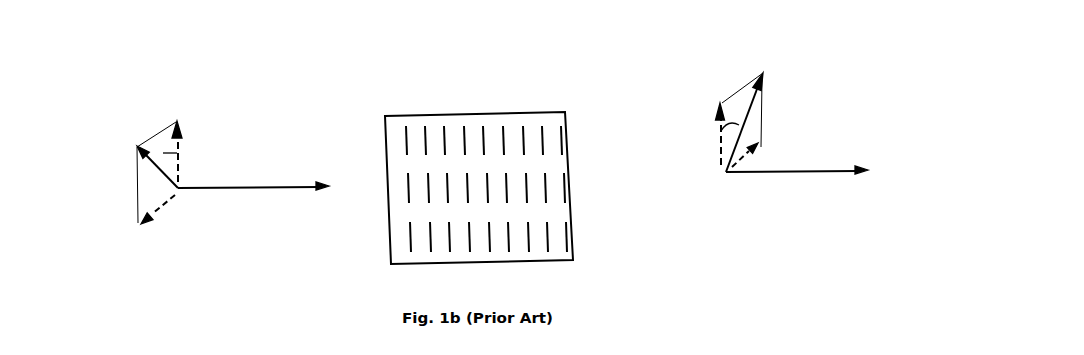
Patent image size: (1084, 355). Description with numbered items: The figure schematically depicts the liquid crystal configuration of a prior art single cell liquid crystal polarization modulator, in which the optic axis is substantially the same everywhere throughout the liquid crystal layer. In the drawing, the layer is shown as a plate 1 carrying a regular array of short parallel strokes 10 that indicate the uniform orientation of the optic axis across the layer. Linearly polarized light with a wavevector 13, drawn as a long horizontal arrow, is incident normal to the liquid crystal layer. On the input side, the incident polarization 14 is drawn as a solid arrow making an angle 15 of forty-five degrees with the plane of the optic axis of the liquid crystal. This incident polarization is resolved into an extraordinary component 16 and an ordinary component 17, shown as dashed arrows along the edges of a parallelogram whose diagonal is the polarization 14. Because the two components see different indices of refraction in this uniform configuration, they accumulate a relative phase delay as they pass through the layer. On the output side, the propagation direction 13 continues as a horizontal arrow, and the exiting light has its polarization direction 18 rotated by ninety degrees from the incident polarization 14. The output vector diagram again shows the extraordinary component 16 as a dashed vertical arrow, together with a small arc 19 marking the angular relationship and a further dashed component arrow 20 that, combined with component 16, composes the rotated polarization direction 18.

The polarizer plate 1 is at (476, 123).
The slits / wire grid 10 is at (410, 237).
The wavevector 13 is at (293, 193).
The polarization 14 is at (175, 183).
The angle 15 is at (163, 153).
The extraordinary component 16 is at (182, 166).
The ordinary component 17 is at (164, 206).
The polarization direction 18 is at (747, 112).
The rotation angle 19 is at (727, 130).
The horizontal component of transmitted polarization 20 is at (748, 163).